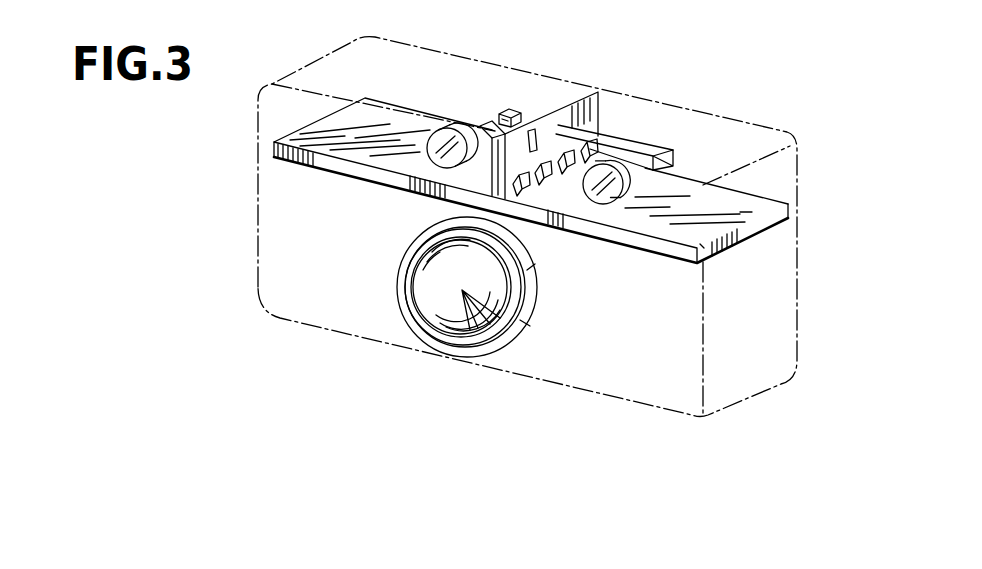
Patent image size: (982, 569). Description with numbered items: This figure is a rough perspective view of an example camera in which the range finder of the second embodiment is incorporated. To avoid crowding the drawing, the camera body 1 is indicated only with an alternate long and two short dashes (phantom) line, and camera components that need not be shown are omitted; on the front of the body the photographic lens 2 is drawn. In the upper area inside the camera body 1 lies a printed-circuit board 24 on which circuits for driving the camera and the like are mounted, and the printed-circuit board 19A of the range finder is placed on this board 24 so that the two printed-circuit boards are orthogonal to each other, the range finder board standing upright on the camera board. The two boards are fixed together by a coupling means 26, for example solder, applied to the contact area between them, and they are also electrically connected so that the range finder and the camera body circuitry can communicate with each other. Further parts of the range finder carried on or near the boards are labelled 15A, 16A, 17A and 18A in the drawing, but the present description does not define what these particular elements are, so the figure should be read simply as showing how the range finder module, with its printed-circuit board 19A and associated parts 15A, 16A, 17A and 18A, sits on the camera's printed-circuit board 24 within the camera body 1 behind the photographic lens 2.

The camera body 1 is at (612, 373).
The photographic lens 2 is at (420, 300).
The light projecting lens 15A is at (598, 193).
The light receiving lens 16A is at (440, 150).
The light emitting element 17A is at (508, 113).
The light receiving element 18A is at (702, 246).
The printed-circuit board 19A is at (593, 118).
The printed-circuit board 24 is at (760, 217).
The coupling means 26 is at (557, 153).